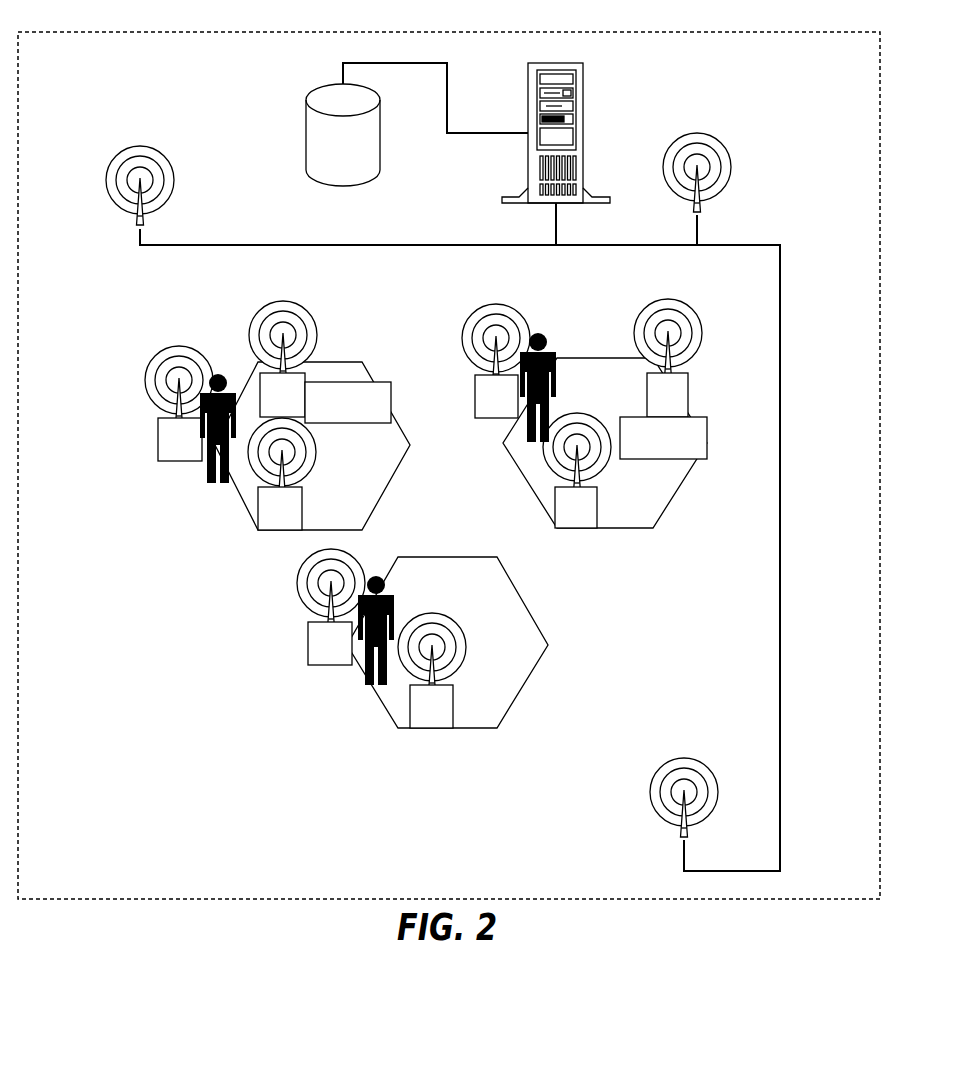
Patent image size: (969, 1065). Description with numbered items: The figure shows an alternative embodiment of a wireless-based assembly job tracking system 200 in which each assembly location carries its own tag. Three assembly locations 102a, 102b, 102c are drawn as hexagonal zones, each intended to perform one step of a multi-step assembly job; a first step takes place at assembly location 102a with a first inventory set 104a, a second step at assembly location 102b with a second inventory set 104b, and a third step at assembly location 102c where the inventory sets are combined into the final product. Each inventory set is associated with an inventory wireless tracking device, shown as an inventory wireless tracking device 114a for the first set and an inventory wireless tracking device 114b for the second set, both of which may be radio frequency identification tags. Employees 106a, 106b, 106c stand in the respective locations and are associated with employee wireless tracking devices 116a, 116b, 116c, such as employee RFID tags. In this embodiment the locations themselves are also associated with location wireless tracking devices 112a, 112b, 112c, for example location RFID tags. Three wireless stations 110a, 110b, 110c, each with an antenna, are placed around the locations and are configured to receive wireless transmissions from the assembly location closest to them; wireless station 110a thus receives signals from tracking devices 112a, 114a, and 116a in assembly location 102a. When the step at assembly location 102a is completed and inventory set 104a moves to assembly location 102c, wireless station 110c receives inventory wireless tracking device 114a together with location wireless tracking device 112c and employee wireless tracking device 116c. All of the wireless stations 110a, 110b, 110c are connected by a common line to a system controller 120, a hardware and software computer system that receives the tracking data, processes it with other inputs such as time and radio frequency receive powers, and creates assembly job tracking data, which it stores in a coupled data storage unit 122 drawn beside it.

The inventory tracking system 200 is at (449, 452).
The assembly location 102a is at (312, 446).
The assembly location 102b is at (605, 443).
The assembly location 102c is at (447, 642).
The inventory set 104a is at (391, 400).
The inventory set 104b is at (702, 433).
The employee 106a is at (220, 483).
The employee 106b is at (540, 443).
The employee 106c is at (382, 583).
The wireless station 110a is at (118, 165).
The wireless station 110b is at (697, 133).
The wireless station 110c is at (652, 805).
The location wireless tracking device 112a is at (258, 515).
The location wireless tracking device 112b is at (557, 515).
The location wireless tracking device 112c is at (410, 707).
The inventory wireless tracking device 114a is at (260, 320).
The inventory wireless tracking device 114b is at (633, 327).
The employee wireless tracking device 116a is at (158, 445).
The employee wireless tracking device 116b is at (470, 390).
The employee wireless tracking device 116c is at (298, 595).
The system controller 120 is at (583, 78).
The data storage unit 122 is at (303, 130).